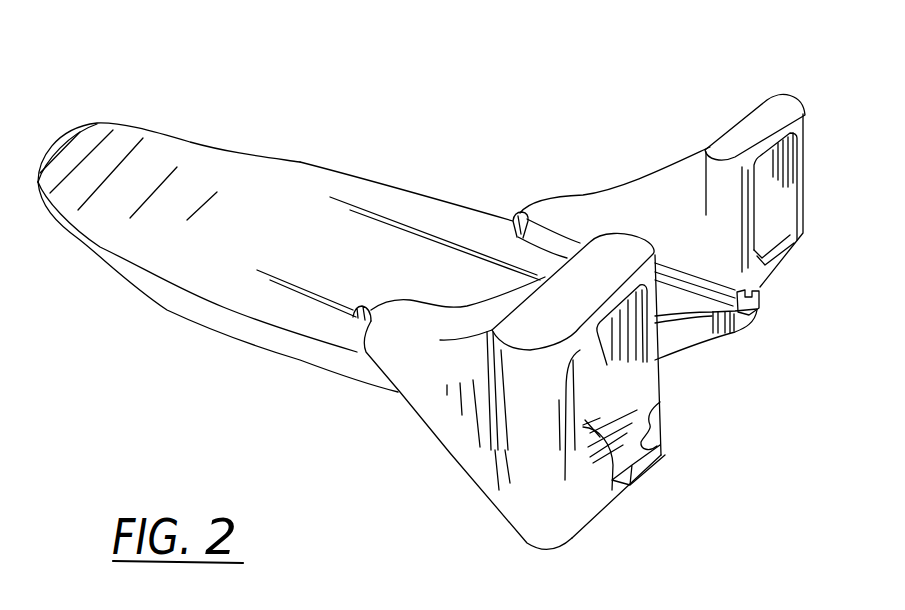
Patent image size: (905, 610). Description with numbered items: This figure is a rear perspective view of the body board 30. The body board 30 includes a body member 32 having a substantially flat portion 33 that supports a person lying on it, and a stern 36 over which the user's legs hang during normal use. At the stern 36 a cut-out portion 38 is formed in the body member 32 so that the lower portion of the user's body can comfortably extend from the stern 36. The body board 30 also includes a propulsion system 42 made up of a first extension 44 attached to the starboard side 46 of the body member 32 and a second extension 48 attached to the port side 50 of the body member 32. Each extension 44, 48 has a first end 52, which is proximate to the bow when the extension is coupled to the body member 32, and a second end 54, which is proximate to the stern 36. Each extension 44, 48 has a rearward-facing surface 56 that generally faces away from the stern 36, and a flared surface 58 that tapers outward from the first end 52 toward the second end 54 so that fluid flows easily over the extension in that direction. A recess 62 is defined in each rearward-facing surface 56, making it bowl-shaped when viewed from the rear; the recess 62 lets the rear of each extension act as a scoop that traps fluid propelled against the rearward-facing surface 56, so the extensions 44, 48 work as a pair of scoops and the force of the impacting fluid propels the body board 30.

The body board 30 is at (288, 80).
The body member 32 is at (325, 256).
The substantially flat portion 33 is at (345, 177).
The stern 36 is at (725, 340).
The cut-out portion 38 is at (710, 378).
The propulsion system 42 is at (608, 70).
The first extension 44 is at (660, 177).
The starboard side 46 is at (293, 168).
The second extension 48 is at (448, 453).
The port side 50 is at (148, 297).
The first end 52 is at (512, 216).
The second end 54 is at (807, 153).
The rearward-facing surface 56 is at (780, 187).
The flared surface 58 is at (597, 200).
The recess 62 is at (767, 233).